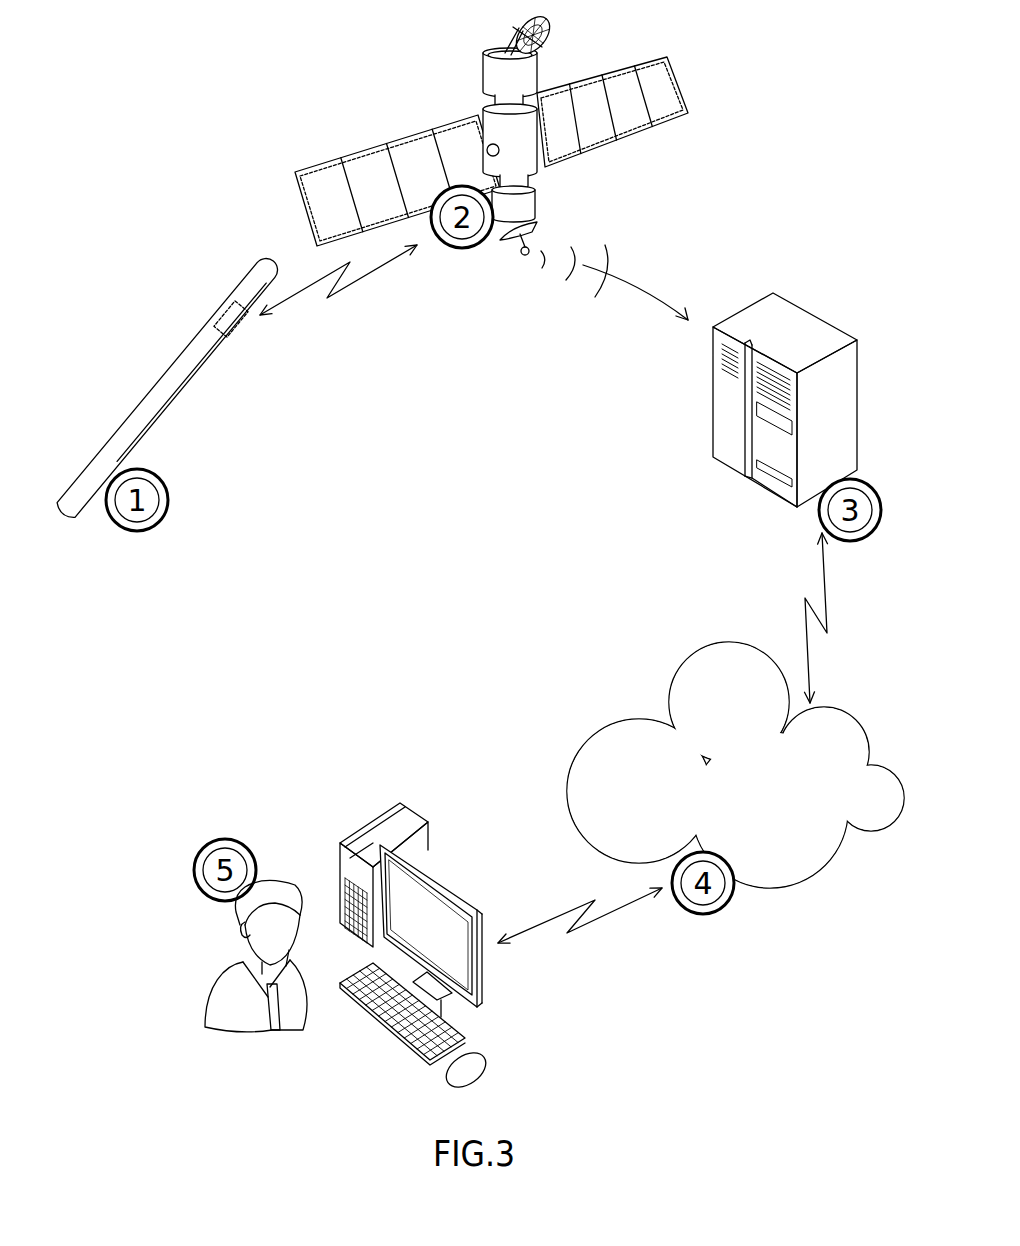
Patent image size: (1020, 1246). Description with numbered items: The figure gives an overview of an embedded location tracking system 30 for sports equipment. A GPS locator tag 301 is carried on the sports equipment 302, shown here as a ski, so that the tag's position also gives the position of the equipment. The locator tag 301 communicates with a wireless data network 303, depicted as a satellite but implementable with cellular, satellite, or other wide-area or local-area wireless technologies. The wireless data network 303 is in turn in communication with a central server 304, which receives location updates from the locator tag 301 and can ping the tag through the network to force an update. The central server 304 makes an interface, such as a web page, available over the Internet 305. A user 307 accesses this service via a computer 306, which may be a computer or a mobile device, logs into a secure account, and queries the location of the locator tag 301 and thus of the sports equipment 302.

The embedded location tracking system 30 is at (872, 900).
The GPS locator tag 301 is at (223, 312).
The sports equipment 302 is at (247, 284).
The wireless data network 303 is at (488, 77).
The central server 304 is at (800, 318).
The Internet 305 is at (677, 690).
The computer 306 is at (363, 838).
The user 307 is at (229, 977).